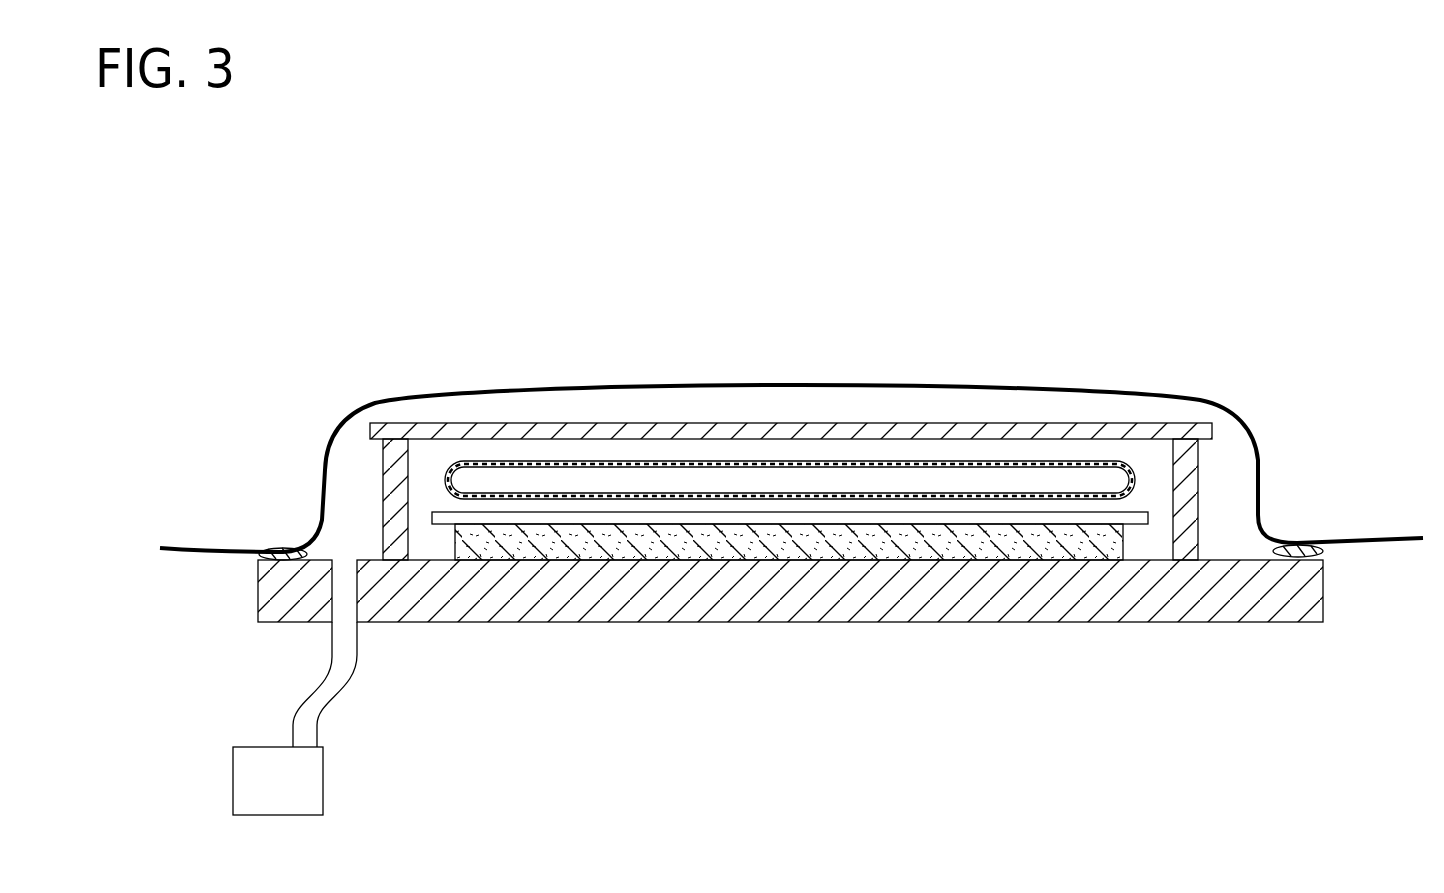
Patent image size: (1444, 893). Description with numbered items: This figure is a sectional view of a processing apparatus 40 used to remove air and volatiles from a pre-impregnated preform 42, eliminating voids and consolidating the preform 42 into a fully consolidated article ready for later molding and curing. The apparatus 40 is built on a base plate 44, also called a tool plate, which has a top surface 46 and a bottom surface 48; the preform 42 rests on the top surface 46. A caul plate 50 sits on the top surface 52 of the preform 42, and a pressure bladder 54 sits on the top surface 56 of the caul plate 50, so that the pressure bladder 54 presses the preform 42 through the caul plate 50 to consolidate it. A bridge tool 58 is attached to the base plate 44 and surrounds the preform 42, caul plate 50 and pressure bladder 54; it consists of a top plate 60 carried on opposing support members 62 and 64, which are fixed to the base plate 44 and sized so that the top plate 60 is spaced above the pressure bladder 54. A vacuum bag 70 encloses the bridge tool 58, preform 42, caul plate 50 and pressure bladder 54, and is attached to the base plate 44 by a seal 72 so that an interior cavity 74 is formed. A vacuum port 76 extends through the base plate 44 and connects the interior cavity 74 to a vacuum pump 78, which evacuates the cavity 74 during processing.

The processing apparatus 40 is at (1228, 233).
The pre-impregnated preform 42 is at (810, 562).
The base plate 44 is at (560, 606).
The top surface 46 is at (1267, 530).
The bottom surface 48 is at (1035, 623).
The caul plate 50 is at (1142, 524).
The top surface 52 is at (1138, 495).
The pressure bladder 54 is at (1143, 510).
The top surface 56 is at (442, 519).
The bridge tool 58 is at (505, 422).
The top plate 60 is at (858, 418).
The support member 62 is at (1198, 490).
The support member 64 is at (383, 477).
The vacuum bag 70 is at (1050, 387).
The seal 72 is at (257, 555).
The interior cavity 74 is at (772, 419).
The vacuum port 76 is at (342, 617).
The vacuum pump 78 is at (258, 815).